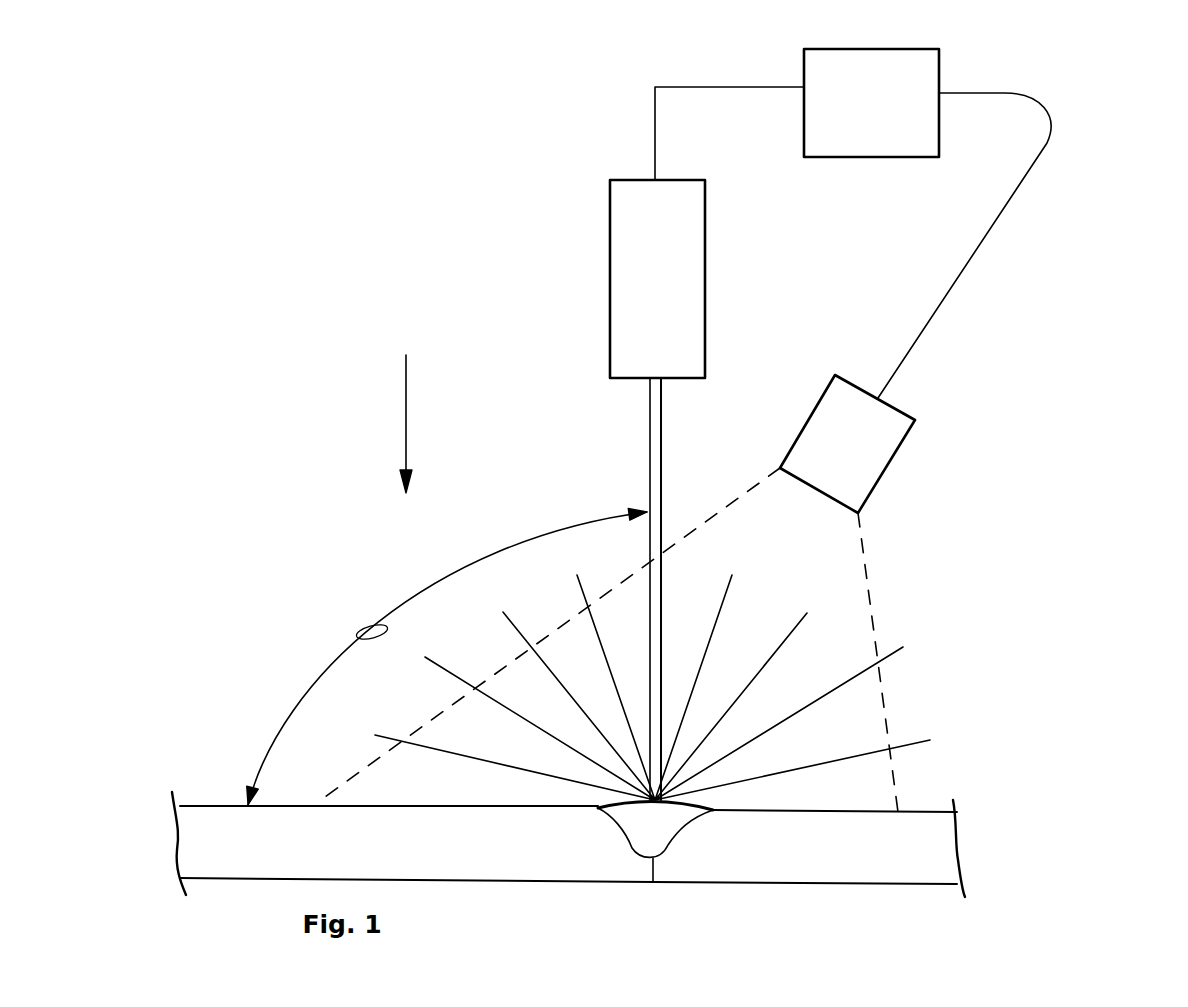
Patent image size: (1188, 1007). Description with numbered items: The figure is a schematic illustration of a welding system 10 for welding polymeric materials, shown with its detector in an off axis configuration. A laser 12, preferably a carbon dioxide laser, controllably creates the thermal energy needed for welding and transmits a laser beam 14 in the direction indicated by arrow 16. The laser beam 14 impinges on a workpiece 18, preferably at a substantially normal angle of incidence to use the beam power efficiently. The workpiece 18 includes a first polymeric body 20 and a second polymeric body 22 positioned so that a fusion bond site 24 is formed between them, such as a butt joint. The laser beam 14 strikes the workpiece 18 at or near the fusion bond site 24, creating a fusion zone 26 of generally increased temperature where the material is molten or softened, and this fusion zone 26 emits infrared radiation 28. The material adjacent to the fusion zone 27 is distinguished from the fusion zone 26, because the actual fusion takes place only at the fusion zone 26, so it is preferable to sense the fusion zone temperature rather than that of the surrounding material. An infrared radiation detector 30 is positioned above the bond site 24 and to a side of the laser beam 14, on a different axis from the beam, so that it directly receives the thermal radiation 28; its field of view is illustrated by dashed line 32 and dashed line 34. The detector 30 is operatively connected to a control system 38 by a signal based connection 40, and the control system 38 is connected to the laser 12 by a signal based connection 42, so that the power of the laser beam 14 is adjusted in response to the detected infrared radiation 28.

The welding system 10 is at (1045, 373).
The laser 12 is at (637, 299).
The laser beam 14 is at (649, 475).
The arrow 16 is at (405, 402).
The workpiece 18 is at (568, 866).
The first polymeric body 20 is at (530, 865).
The second polymeric body 22 is at (845, 870).
The fusion bond site 24 is at (650, 870).
The fusion zone 26 is at (665, 837).
The material adjacent to the fusion zone 27 is at (725, 808).
The infrared radiation 28 is at (917, 740).
The infrared radiation detector 30 is at (832, 452).
The dashed line 32 is at (866, 572).
The dashed line 34 is at (685, 528).
The control system 38 is at (856, 122).
The signal based connection 40 is at (984, 240).
The signal based connection 42 is at (655, 125).